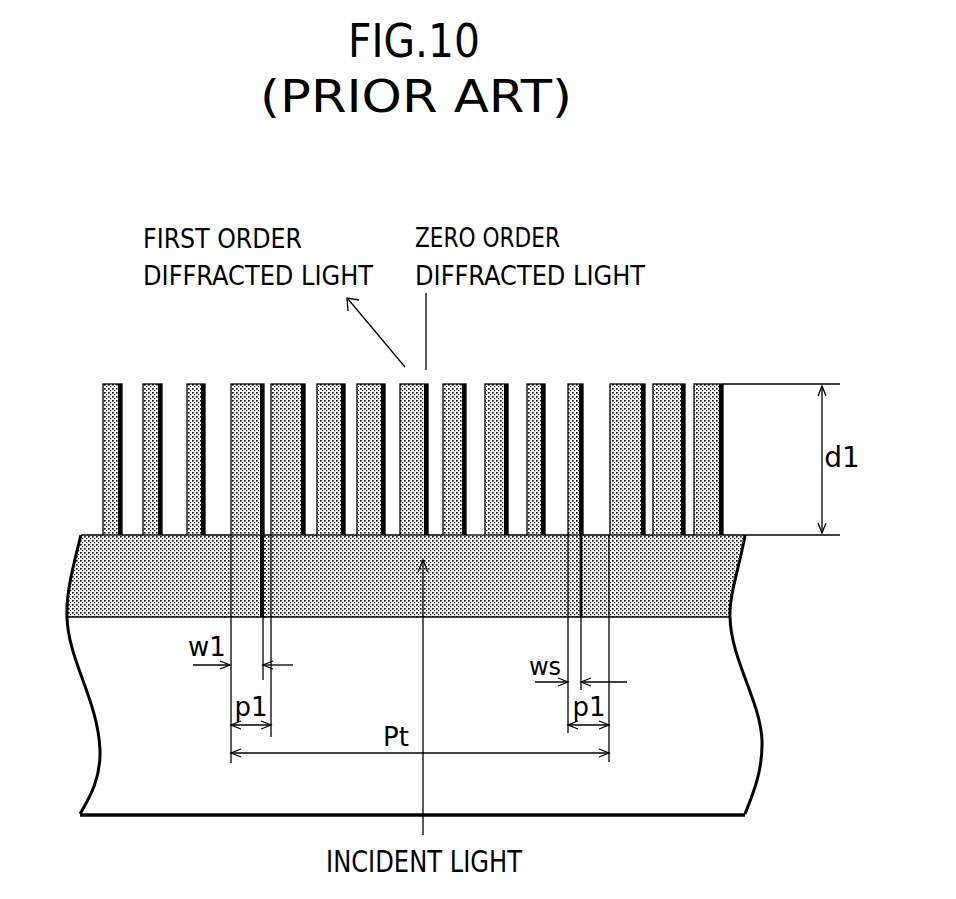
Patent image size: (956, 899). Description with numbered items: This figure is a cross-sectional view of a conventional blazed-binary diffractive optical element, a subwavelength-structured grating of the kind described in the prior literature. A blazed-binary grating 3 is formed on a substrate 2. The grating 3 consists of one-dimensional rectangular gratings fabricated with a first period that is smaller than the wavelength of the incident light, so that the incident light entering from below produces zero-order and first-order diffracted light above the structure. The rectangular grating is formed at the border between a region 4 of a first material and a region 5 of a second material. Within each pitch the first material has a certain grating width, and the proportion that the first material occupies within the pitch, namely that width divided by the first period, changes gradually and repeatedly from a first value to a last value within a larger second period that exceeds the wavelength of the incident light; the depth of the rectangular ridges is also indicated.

The substrate 2 is at (750, 720).
The grating projection 3 is at (112, 442).
The grating layer 4 is at (725, 575).
The groove 5 is at (478, 377).